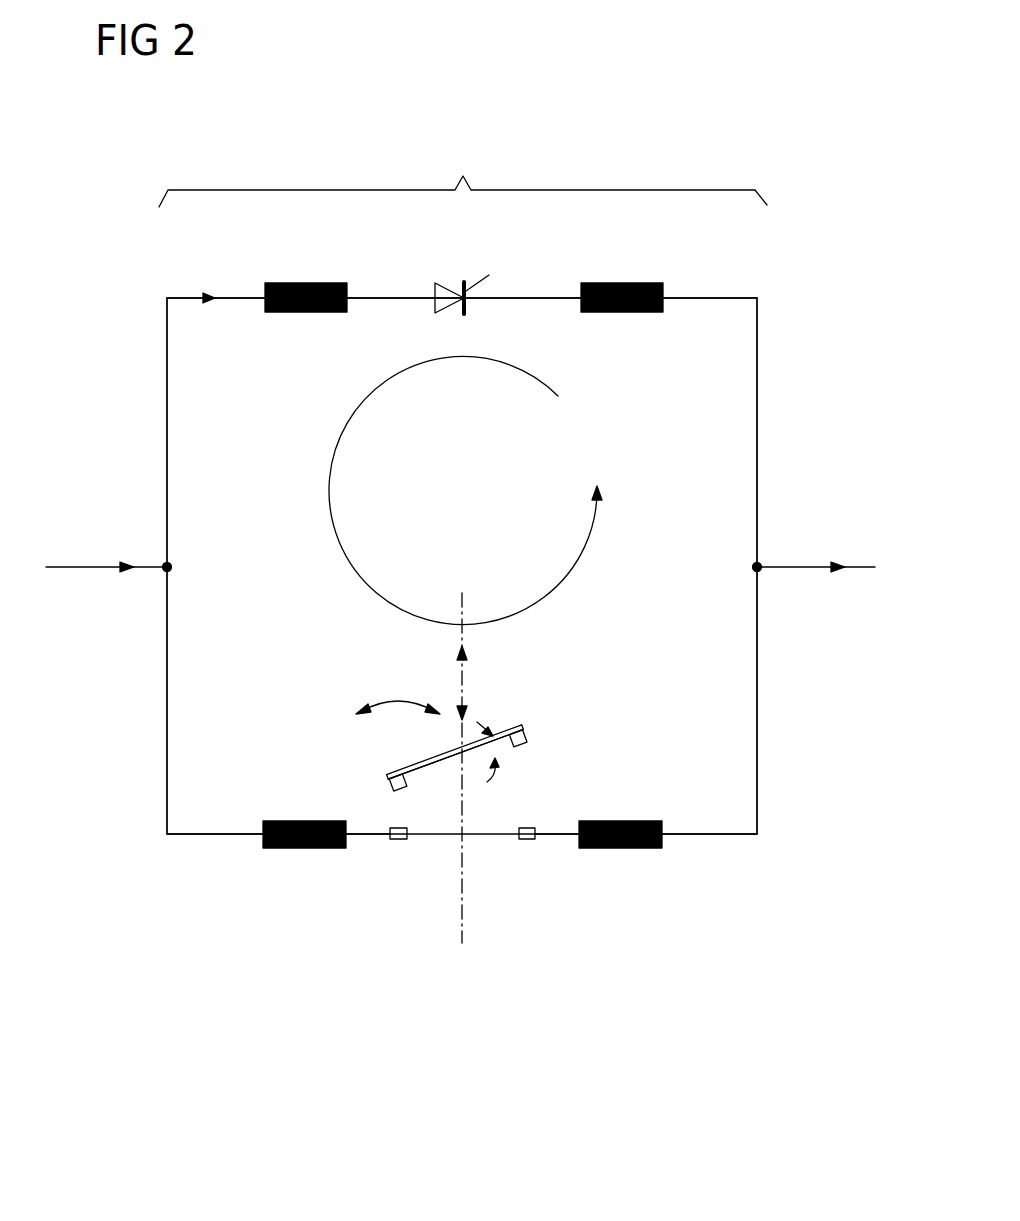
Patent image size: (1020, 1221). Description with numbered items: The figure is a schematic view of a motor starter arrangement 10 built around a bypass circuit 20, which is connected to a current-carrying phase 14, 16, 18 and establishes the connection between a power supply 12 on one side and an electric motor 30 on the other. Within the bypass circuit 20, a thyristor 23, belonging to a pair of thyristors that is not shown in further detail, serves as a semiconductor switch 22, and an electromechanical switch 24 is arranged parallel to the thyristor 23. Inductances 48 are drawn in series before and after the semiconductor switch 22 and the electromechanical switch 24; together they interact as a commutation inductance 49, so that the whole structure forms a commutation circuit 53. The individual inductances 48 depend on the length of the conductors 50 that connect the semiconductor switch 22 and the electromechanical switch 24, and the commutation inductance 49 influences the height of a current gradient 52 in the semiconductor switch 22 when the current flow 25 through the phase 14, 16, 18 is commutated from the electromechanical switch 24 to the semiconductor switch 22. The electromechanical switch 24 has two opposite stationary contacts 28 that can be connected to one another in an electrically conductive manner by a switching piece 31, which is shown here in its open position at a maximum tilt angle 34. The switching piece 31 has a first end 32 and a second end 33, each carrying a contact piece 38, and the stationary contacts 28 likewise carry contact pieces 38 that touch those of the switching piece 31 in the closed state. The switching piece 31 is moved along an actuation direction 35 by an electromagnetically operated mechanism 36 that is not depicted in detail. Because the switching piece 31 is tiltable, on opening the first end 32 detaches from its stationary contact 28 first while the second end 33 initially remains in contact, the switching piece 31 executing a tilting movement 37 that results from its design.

The sensor device 10 is at (213, 962).
The power supply 12 is at (43, 583).
The current-carrying phase 14 is at (462, 533).
The current-carrying phase 16 is at (462, 533).
The current-carrying phase 18 is at (82, 565).
The bypass circuit 20 is at (463, 177).
The semiconductor switch 22 is at (465, 265).
The thyristor 23 is at (465, 265).
The electromechanical switch 24 is at (632, 768).
The current flow 25 is at (209, 302).
The stationary contact 28 is at (400, 840).
The electric motor 30 is at (908, 583).
The switching piece 31 is at (448, 747).
The first end 32 is at (510, 720).
The second end 33 is at (392, 772).
The maximum tilt angle 34 is at (495, 748).
The actuation direction 35 is at (512, 768).
The electromagnetically operated mechanism 36 is at (463, 682).
The tilting movement 37 is at (398, 703).
The contact piece 38 is at (449, 827).
The inductance 48 is at (307, 283).
The commutation inductance 49 is at (405, 491).
The conductor 50 is at (387, 298).
The current gradient 52 is at (452, 290).
The commutation circuit 53 is at (330, 485).